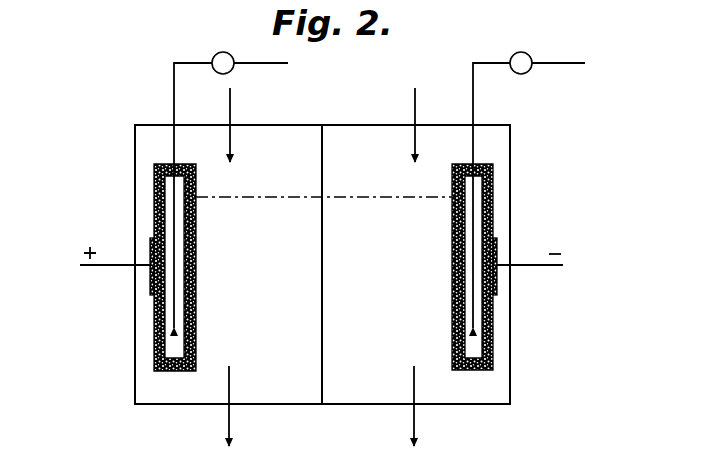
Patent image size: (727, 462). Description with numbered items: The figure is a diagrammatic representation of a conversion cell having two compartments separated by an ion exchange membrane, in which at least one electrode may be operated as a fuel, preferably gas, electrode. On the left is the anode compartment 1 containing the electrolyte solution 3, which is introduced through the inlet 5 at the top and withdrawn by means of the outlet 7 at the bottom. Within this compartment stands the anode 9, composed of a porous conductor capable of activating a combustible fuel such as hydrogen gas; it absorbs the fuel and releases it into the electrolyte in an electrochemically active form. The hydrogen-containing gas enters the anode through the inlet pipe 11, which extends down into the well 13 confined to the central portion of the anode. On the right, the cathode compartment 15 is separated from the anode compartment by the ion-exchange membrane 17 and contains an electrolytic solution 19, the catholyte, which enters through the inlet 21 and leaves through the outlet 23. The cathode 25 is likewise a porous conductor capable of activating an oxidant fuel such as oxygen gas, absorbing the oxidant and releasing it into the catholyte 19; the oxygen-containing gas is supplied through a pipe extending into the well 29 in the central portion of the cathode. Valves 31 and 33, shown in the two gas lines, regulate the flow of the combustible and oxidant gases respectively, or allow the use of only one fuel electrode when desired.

The anode compartment 1 is at (146, 144).
The electrolyte solution 3 is at (283, 365).
The inlet 5 is at (230, 100).
The outlet 7 is at (229, 414).
The anode 9 is at (154, 218).
The inlet pipe 11 is at (174, 95).
The well 13 is at (170, 346).
The cathode compartment 15 is at (499, 148).
The ion-exchange membrane 17 is at (322, 265).
The electrolytic solution 19 is at (437, 373).
The inlet 21 is at (415, 100).
The outlet 23 is at (414, 413).
The cathode 25 is at (493, 333).
The well 29 is at (480, 220).
The valve 31 is at (218, 53).
The valve 33 is at (531, 56).